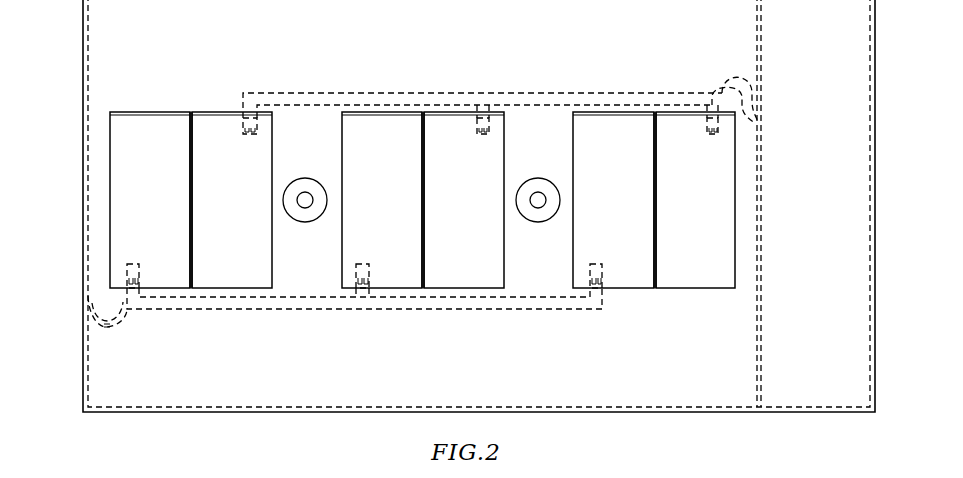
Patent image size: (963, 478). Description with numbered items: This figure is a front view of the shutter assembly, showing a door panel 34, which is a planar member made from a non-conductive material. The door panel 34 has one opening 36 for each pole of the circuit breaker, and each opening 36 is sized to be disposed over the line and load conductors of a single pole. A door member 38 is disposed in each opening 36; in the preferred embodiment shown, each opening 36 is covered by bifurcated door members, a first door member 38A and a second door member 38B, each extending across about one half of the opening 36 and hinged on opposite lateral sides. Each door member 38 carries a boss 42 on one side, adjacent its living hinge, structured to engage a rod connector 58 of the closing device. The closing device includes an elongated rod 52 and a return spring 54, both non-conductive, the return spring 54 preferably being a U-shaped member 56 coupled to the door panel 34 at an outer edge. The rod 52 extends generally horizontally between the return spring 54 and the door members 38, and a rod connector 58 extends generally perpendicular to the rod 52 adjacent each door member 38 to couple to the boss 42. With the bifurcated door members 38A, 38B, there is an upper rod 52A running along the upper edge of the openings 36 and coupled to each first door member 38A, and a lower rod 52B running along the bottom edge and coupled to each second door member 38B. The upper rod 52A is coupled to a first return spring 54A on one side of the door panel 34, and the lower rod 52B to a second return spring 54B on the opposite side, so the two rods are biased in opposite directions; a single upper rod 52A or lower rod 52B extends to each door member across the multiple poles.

The door panel 34 is at (226, 393).
The opening 36 is at (162, 121).
The door member 38 is at (422, 144).
The first door member 38A is at (212, 118).
The second door member 38B is at (138, 122).
The boss 42 is at (253, 137).
The rod 52 is at (424, 190).
The upper rod 52A is at (535, 92).
The lower rod 52B is at (286, 311).
The return spring 54 is at (423, 200).
The first return spring 54A is at (735, 74).
The second return spring 54B is at (131, 325).
The U-shaped member 56 is at (67, 298).
The rod connector 58 is at (243, 130).